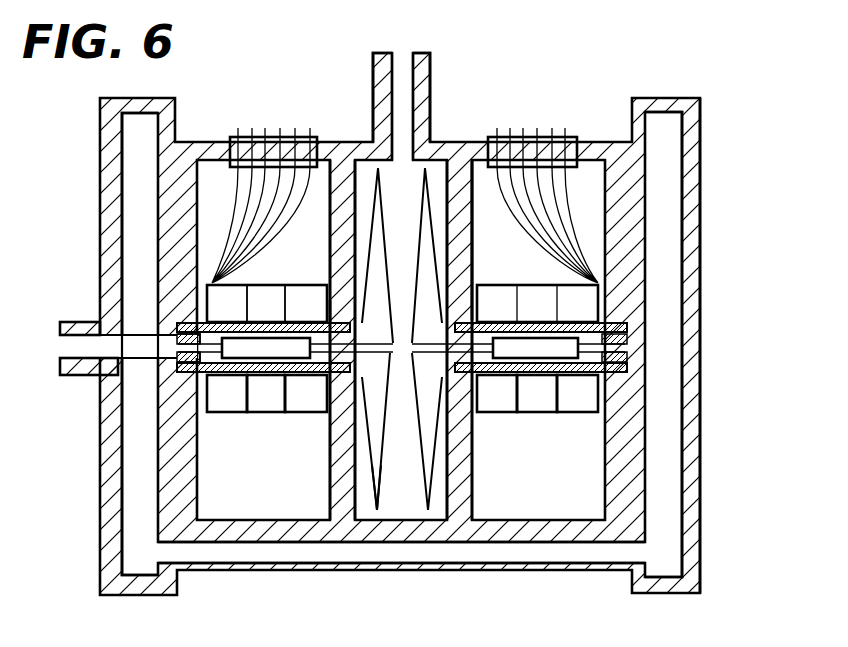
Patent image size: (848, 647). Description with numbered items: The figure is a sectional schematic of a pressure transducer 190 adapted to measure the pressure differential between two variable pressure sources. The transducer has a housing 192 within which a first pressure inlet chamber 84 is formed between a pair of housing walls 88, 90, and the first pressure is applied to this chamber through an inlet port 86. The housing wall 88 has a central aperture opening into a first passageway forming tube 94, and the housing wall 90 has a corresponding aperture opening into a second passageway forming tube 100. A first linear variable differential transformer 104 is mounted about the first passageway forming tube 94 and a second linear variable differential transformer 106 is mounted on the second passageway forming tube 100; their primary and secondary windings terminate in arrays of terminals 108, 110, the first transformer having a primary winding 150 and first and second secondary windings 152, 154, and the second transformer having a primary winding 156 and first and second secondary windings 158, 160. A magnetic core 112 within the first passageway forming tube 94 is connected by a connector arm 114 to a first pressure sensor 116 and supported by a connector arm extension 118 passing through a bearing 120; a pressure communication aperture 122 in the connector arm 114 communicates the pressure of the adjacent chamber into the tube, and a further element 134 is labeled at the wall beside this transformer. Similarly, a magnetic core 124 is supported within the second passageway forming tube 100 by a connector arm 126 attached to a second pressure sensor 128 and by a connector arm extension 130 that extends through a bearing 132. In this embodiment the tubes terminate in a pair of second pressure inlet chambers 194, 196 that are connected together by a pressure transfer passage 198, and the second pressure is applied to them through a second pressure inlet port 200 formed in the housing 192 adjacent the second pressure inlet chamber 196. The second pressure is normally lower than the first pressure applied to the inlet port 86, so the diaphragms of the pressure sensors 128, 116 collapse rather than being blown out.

The first pressure inlet chamber 84 is at (410, 175).
The inlet port 86 is at (422, 53).
The housing wall 88 is at (462, 480).
The housing wall 90 is at (340, 497).
The first passageway forming tube 94 is at (483, 338).
The second passageway forming tube 100 is at (318, 337).
The first linear variable differential transformer 104 is at (603, 300).
The second linear variable differential transformer 106 is at (206, 300).
The array of terminals 108 is at (518, 128).
The array of terminals 110 is at (296, 128).
The magnetic core 112 is at (532, 343).
The connector arm 114 is at (430, 343).
The first pressure sensor 116 is at (420, 498).
The connector arm extension 118 is at (625, 348).
The bearing 120 is at (625, 326).
The pressure communication aperture 122 is at (468, 295).
The magnetic core 124 is at (268, 343).
The connector arm 126 is at (372, 420).
The second pressure sensor 128 is at (380, 500).
The connector arm extension 130 is at (178, 347).
The bearing 132 is at (170, 365).
The wall notch 134 is at (332, 313).
The primary winding 150 is at (533, 400).
The first secondary winding 152 is at (578, 400).
The second secondary winding 154 is at (500, 400).
The primary winding 156 is at (263, 400).
The first secondary winding 158 is at (298, 400).
The second secondary winding 160 is at (223, 397).
The pressure transducer 190 is at (700, 195).
The housing 192 is at (692, 218).
The second pressure inlet chamber 194 is at (665, 452).
The second pressure inlet chamber 196 is at (140, 462).
The pressure transfer passage 198 is at (580, 552).
The second pressure inlet port 200 is at (80, 322).